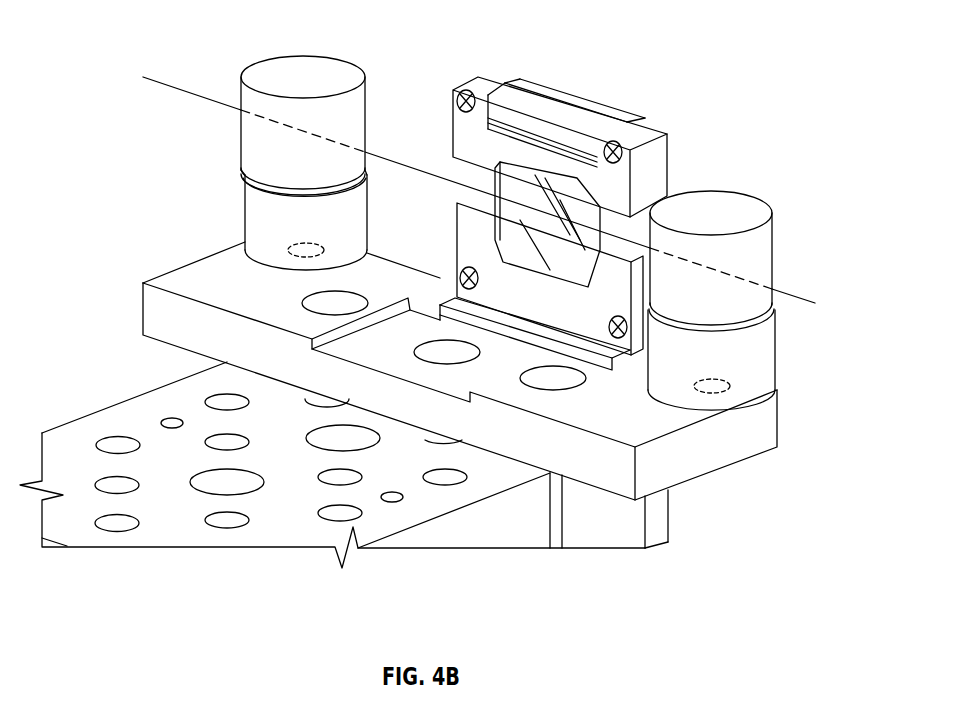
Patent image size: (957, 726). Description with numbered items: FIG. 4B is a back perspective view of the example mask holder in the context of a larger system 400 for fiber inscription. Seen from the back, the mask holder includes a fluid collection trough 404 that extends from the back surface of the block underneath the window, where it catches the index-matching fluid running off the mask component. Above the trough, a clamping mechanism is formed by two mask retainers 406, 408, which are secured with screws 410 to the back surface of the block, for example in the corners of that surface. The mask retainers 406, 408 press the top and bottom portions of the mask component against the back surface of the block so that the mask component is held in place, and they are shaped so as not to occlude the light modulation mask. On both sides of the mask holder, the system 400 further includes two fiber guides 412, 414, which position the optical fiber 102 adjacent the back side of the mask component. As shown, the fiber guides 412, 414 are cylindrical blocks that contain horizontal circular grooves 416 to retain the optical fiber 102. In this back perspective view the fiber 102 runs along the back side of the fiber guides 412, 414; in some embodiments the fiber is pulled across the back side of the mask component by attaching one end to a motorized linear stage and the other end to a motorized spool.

The system for fiber inscription 400 is at (753, 53).
The optical fiber 102 is at (797, 298).
The fluid collection trough 404 is at (447, 305).
The mask retainer 406 is at (452, 137).
The mask retainer 408 is at (456, 238).
The screws 410 is at (456, 98).
The fiber guide 412 is at (757, 202).
The fiber guide 414 is at (258, 63).
The horizontal circular grooves 416 is at (241, 167).